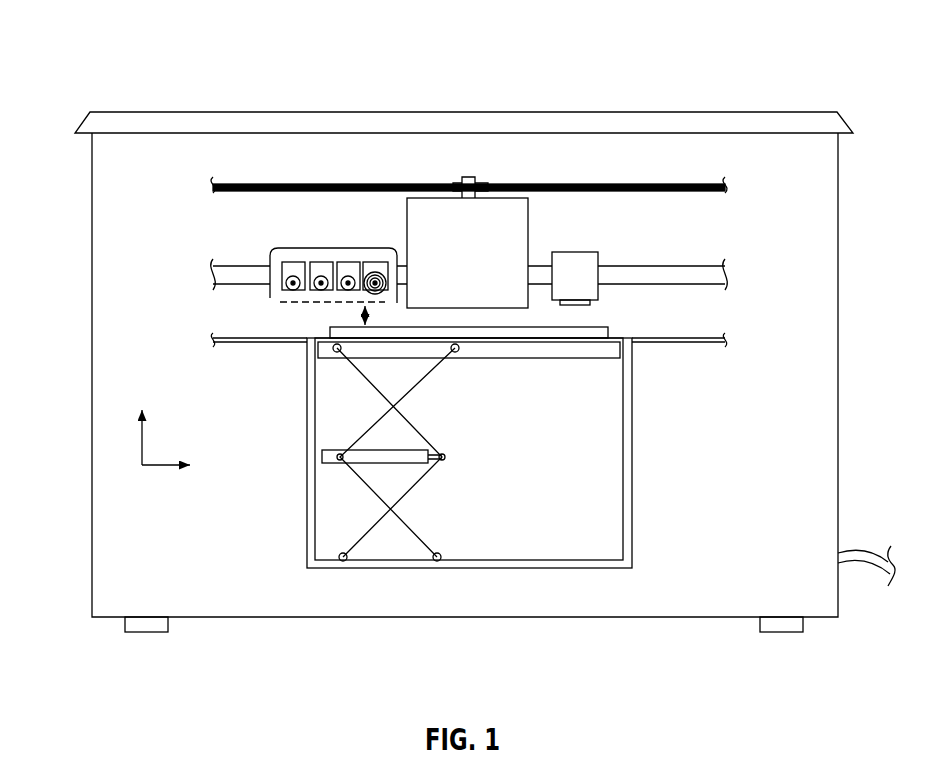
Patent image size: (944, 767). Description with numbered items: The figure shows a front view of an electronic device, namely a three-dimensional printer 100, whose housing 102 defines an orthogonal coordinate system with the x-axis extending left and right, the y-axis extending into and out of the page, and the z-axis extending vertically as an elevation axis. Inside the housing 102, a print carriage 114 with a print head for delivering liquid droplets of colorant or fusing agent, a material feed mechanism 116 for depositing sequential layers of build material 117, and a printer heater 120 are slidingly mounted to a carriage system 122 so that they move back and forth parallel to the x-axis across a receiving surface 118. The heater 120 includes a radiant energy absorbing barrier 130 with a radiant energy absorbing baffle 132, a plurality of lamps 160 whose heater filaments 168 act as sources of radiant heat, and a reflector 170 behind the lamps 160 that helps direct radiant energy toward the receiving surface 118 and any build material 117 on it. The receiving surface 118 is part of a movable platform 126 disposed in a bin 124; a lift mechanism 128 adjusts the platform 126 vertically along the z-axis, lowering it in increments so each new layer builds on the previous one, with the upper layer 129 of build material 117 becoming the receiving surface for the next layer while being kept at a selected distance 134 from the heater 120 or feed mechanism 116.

The printer 100 is at (823, 53).
The housing 102 is at (92, 271).
The print carriage 114 is at (493, 236).
The material feed mechanism 116 is at (575, 278).
The build material 117 is at (572, 337).
The receiving surface 118 is at (325, 336).
The printer heater 120 is at (313, 249).
The carriage system 122 is at (215, 193).
The bin 124 is at (307, 558).
The movable platform 126 is at (558, 351).
The lift mechanism 128 is at (418, 430).
The upper layer 129 is at (590, 325).
The radiant energy absorbing barrier 130 is at (328, 264).
The radiant energy absorbing baffle 132 is at (323, 215).
The selected distance 134 is at (369, 319).
The lamps 160 is at (290, 288).
The heater filament 168 is at (377, 271).
The reflector 170 is at (344, 264).